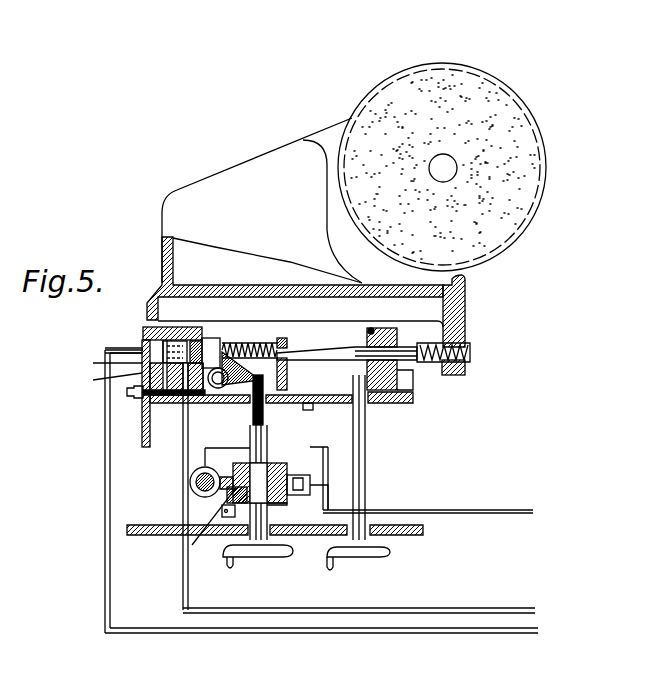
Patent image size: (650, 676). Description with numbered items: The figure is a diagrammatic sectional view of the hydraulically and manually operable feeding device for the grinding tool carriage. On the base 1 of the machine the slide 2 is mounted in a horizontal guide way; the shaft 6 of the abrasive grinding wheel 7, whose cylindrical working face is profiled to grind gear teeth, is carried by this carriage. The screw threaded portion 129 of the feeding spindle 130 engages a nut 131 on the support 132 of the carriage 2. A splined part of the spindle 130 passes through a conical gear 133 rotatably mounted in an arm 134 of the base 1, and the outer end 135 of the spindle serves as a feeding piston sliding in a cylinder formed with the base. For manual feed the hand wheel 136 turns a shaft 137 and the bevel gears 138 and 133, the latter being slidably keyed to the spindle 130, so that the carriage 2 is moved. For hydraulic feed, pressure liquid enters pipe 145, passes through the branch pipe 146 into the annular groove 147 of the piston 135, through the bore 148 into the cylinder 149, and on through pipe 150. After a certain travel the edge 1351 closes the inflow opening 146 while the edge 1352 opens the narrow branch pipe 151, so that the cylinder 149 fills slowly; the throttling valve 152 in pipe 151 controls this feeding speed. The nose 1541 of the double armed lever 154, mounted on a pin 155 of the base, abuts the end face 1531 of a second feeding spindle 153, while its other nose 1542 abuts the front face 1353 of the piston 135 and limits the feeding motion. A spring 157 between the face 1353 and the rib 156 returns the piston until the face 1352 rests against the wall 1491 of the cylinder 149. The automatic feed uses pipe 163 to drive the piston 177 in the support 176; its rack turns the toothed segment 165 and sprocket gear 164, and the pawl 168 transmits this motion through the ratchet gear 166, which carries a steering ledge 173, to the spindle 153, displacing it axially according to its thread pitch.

The base 1 is at (400, 403).
The slide 2 is at (162, 213).
The shaft 6 is at (452, 162).
The abrasive grinding wheel 7 is at (533, 175).
The screw threaded portion 129 is at (460, 352).
The feeding spindle 130 is at (325, 353).
The nut 131 is at (455, 375).
The support 132 is at (471, 313).
The conical gear 133 is at (380, 335).
The arm 134 is at (390, 378).
The outer end of the spindle 135 is at (215, 340).
The hand wheel 136 is at (365, 557).
The shaft 137 is at (378, 462).
The bevel gear 138 is at (372, 320).
The pipe 145 is at (183, 466).
The branch pipe 146 is at (103, 381).
The annular groove 147 is at (243, 287).
The bore 148 is at (177, 327).
The cylinder 149 is at (143, 348).
The pipe 150 is at (105, 468).
The narrow branch pipe 151 is at (165, 395).
The throttling valve 152 is at (127, 392).
The feeding spindle 153 is at (270, 395).
The double armed lever 154 is at (248, 365).
The pin 155 is at (190, 400).
The rib 156 is at (286, 338).
The spring 157 is at (272, 340).
The pipe 163 is at (511, 510).
The sprocket gear 164 is at (272, 470).
The toothed segment 165 is at (188, 549).
The ratchet gear 166 is at (285, 503).
The pawl 168 is at (312, 490).
The steering ledge 173 is at (228, 517).
The support 176 is at (228, 495).
The piston 177 is at (190, 482).
The edge 1351 is at (200, 341).
The edge 1352 is at (167, 345).
The front face 1353 is at (249, 339).
The wall 1491 is at (102, 363).
The end face 1531 is at (324, 414).
The nose 1541 is at (228, 378).
The nose 1542 is at (218, 392).